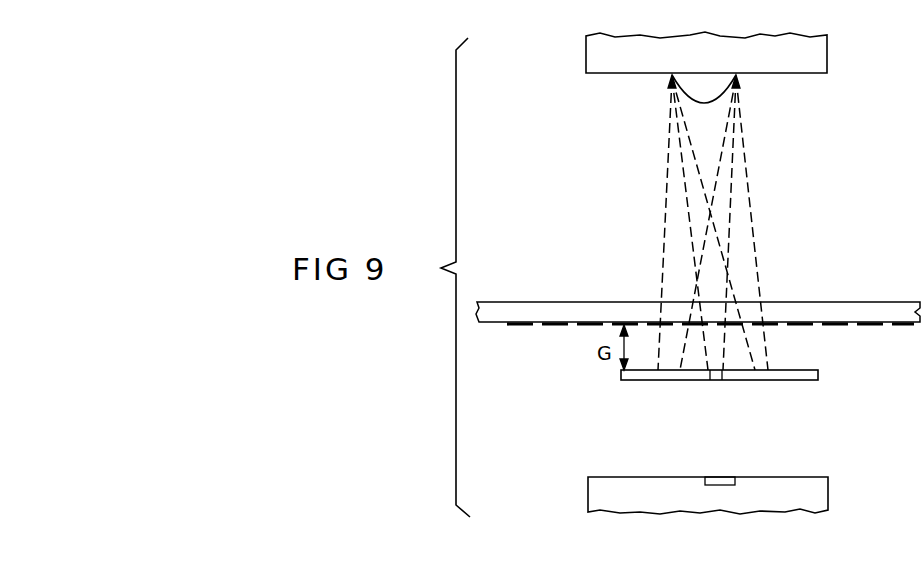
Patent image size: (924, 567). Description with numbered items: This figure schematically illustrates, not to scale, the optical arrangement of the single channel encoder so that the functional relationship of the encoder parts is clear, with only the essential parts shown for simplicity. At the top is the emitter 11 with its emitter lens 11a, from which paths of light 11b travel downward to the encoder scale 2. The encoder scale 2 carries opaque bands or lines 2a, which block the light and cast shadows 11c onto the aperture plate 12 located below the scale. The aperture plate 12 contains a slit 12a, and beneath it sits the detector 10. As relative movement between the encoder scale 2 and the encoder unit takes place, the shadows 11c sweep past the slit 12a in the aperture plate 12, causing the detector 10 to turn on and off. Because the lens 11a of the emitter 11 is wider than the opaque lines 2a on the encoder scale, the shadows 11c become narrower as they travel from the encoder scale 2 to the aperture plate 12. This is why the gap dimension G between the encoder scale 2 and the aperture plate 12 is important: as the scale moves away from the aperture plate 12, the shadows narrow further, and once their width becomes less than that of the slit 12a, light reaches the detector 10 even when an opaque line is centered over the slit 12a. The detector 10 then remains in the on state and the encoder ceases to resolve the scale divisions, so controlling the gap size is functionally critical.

The encoder scale 2 is at (880, 303).
The opaque bands or lines 2a is at (561, 326).
The detector 10 is at (828, 490).
The emitter 11 is at (827, 58).
The emitter lens 11a is at (739, 80).
The paths of light 11b is at (727, 188).
The shadows 11c is at (715, 342).
The aperture plate 12 is at (808, 381).
The slit 12a is at (714, 381).